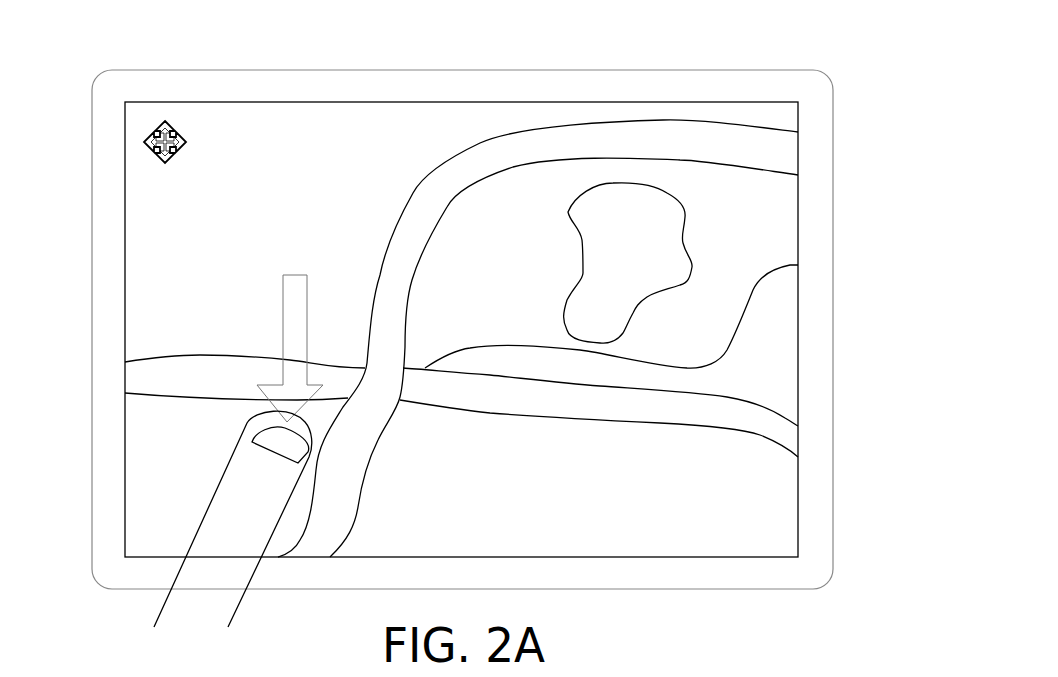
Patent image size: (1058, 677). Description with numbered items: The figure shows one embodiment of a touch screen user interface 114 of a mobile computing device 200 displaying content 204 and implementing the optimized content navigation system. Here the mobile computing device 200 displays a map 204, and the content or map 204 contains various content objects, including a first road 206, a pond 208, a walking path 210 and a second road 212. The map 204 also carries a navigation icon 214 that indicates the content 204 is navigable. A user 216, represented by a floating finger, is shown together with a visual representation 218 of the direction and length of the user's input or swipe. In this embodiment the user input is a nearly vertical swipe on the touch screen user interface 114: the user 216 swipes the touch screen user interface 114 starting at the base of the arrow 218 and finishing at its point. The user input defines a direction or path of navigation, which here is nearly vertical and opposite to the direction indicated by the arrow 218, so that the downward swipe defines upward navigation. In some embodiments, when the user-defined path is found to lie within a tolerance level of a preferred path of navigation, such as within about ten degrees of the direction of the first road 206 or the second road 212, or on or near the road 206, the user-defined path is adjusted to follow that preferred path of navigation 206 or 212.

The mobile computing device 200 is at (257, 66).
The touch screen user interface 114 is at (370, 166).
The content 204 is at (722, 102).
The first road 206 is at (776, 134).
The pond 208 is at (685, 215).
The walking path 210 is at (747, 310).
The second road 212 is at (165, 355).
The navigation icon 214 is at (155, 129).
The user 216 is at (237, 452).
The visual representation 218 is at (280, 323).